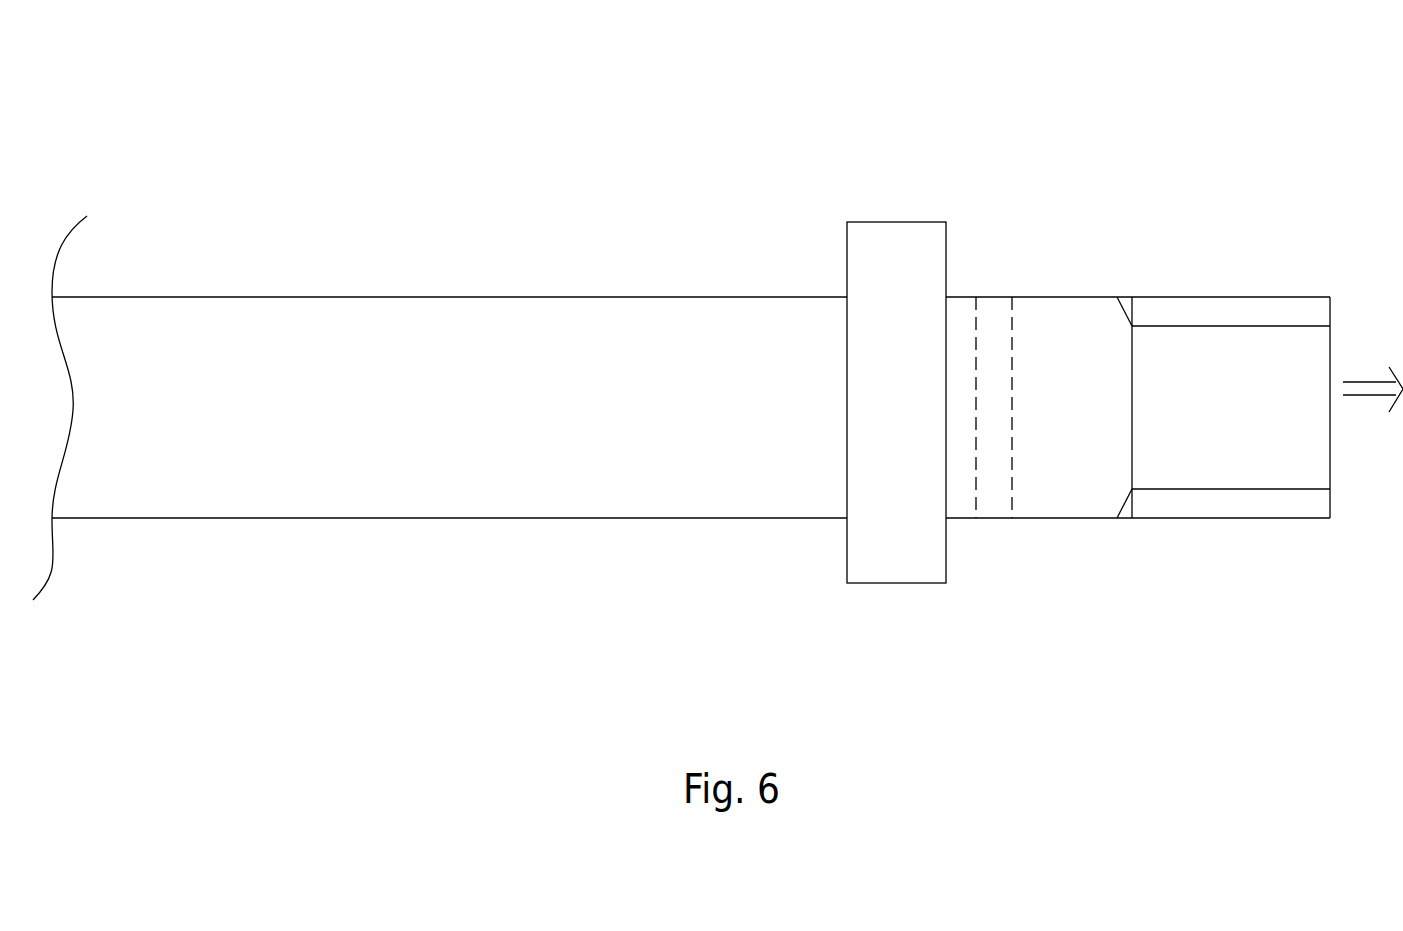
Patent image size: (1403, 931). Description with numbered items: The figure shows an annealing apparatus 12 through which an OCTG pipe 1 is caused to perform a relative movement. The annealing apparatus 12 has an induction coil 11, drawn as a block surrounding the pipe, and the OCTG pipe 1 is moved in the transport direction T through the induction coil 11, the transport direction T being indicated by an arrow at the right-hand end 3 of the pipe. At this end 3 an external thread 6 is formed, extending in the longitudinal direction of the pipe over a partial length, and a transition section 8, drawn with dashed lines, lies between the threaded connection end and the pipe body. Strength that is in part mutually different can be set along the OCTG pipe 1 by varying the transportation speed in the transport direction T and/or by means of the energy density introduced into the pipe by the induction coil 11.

The OCTG pipe 1 is at (1066, 501).
The end 3 is at (1357, 452).
The external thread 6 is at (1243, 504).
The transition section 8 is at (993, 498).
The induction coil 11 is at (904, 250).
The annealing apparatus 12 is at (764, 146).
The transport direction T is at (1360, 382).